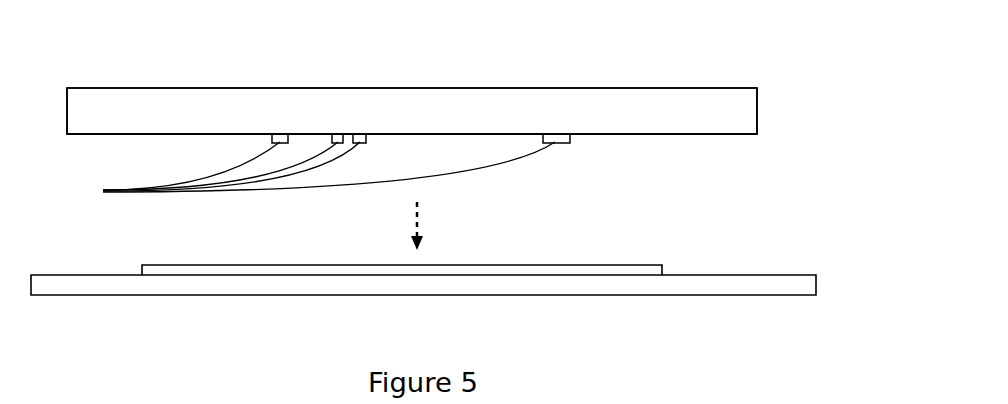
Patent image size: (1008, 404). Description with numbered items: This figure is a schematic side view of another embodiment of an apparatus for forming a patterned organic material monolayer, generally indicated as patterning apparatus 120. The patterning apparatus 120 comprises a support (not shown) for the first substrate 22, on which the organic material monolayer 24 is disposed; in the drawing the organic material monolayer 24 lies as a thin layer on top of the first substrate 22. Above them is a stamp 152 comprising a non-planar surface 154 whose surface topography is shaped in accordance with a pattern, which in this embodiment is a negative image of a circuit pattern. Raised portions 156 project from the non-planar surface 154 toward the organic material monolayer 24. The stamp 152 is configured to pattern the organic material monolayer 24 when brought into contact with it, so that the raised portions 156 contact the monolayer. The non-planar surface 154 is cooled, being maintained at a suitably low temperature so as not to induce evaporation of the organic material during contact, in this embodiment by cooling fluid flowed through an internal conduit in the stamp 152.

The patterning apparatus 120 is at (743, 45).
The stamp 152 is at (750, 108).
The non-planar surface 154 is at (720, 143).
The raised portions 156 is at (317, 168).
The organic material monolayer 24 is at (640, 267).
The first substrate 22 is at (724, 282).